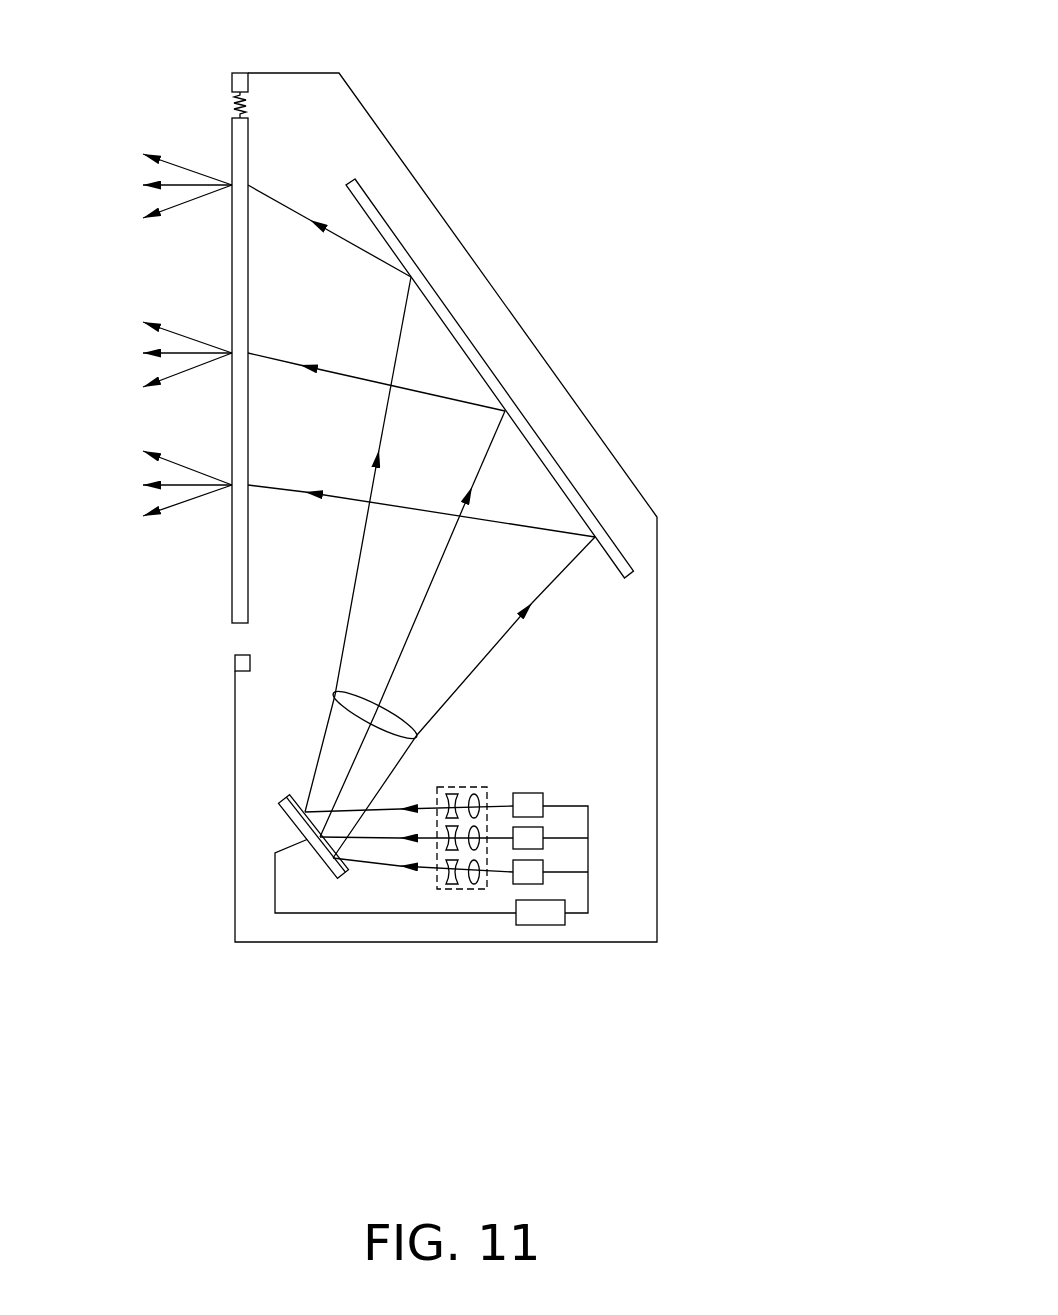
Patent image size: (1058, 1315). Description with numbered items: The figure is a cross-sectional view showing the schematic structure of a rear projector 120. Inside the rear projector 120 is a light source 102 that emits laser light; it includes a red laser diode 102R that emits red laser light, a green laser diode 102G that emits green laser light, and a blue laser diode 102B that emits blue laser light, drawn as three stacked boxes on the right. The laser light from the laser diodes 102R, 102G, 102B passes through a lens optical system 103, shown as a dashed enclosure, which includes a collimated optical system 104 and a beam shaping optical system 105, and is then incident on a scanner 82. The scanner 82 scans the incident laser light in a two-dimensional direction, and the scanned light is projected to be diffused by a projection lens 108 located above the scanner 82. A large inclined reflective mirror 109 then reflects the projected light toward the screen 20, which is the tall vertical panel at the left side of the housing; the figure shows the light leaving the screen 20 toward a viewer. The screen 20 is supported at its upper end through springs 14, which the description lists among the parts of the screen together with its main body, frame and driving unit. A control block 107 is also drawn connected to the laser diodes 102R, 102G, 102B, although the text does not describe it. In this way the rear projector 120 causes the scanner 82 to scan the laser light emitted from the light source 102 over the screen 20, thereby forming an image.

The rear projector 120 is at (462, 73).
The springs 14 is at (235, 108).
The screen 20 is at (232, 147).
The reflective mirror 109 is at (482, 357).
The projection lens 108 is at (335, 696).
The scanner 82 is at (277, 800).
The beam shaping optical system 105 is at (490, 768).
The collimated optical system 104 is at (478, 792).
The red laser diode 102R is at (543, 795).
The green laser diode 102G is at (543, 829).
The blue laser diode 102B is at (543, 862).
The light source 102 is at (686, 814).
The lens optical system 103 is at (508, 874).
The control circuit 107 is at (537, 918).